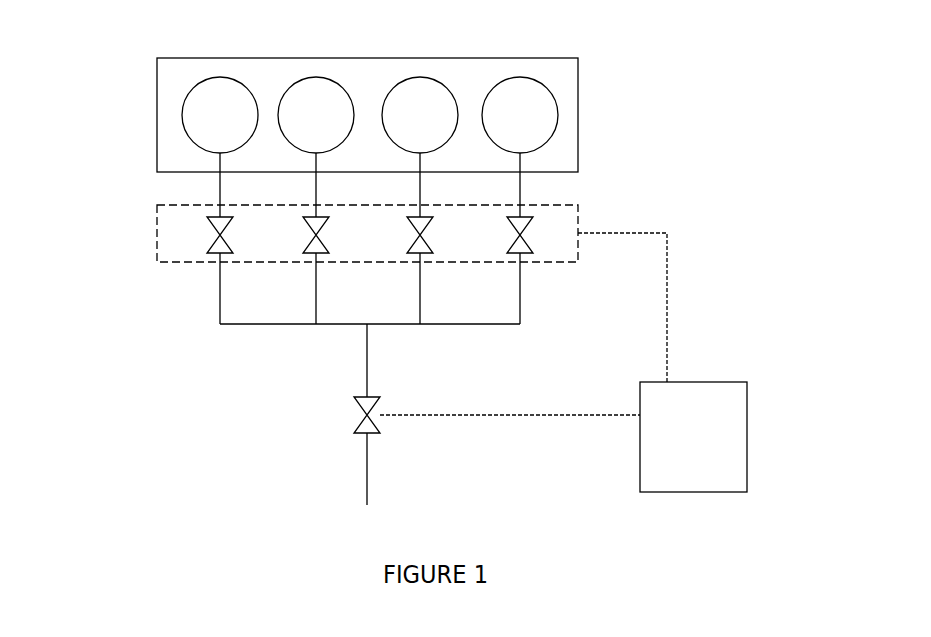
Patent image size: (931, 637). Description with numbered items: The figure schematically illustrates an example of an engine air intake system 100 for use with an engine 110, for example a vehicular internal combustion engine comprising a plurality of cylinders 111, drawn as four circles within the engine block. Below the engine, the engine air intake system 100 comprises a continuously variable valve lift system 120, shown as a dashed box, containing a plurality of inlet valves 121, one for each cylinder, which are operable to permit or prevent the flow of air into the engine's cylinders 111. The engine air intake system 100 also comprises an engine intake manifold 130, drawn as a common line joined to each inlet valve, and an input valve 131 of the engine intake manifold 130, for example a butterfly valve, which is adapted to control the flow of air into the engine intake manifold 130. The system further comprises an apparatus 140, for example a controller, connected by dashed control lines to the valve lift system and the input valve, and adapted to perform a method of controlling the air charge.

The engine air intake system 100 is at (127, 188).
The engine 110 is at (412, 91).
The cylinder 111 is at (422, 92).
The continuously variable valve lift system 120 is at (392, 227).
The inlet valve 121 is at (213, 258).
The engine intake manifold 130 is at (515, 337).
The input valve 131 is at (355, 433).
The apparatus 140 is at (738, 407).